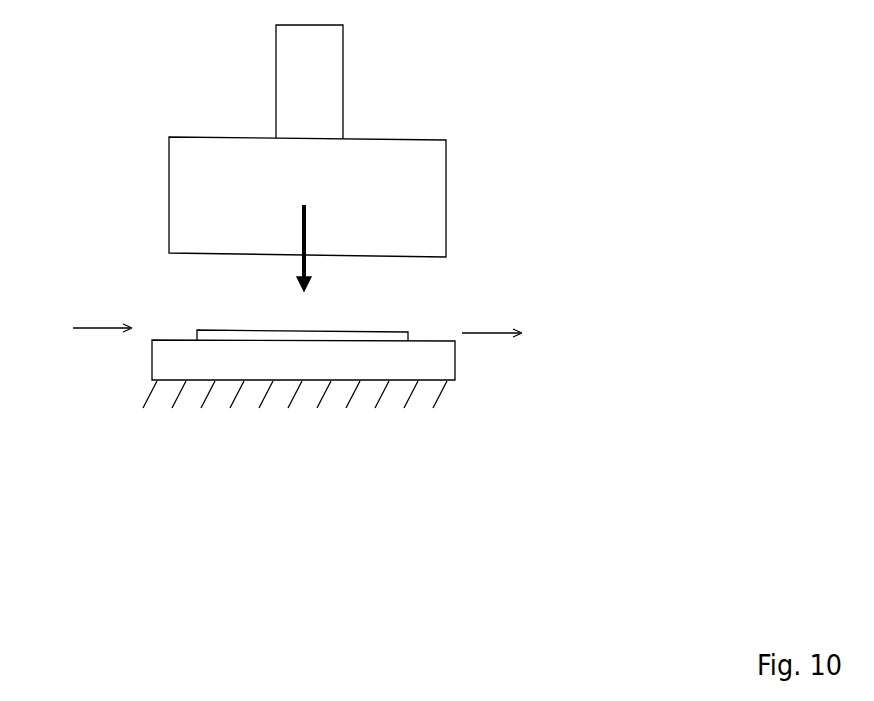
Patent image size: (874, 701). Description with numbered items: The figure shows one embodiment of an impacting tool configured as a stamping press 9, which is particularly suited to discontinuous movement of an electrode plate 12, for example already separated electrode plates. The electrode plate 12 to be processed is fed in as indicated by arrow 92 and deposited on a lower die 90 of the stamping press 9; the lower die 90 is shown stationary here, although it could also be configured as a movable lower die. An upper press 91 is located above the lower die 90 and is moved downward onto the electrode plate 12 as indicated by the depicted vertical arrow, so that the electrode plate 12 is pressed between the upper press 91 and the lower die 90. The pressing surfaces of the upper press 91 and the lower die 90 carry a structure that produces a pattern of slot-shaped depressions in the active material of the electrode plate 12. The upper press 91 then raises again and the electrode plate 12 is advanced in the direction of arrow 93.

The stamping press 9 is at (437, 102).
The upper press 91 is at (446, 182).
The electrode plate 12 is at (375, 329).
The lower die 90 is at (455, 355).
The arrow 92 is at (95, 328).
The arrow 93 is at (490, 332).